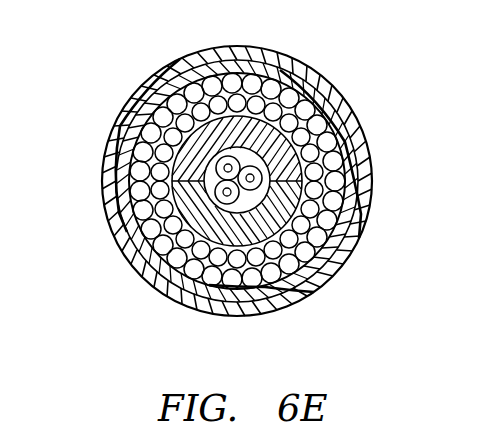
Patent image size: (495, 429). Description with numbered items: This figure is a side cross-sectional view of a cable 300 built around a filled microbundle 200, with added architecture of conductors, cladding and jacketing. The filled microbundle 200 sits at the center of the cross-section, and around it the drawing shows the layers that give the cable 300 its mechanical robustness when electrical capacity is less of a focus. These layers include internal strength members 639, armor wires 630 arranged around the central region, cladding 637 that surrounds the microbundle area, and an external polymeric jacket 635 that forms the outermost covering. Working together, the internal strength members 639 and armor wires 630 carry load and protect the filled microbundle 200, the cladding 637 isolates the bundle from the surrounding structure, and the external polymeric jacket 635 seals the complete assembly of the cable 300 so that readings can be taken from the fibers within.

The cable 300 is at (333, 55).
The armor wires 630 is at (357, 124).
The external polymeric jacket 635 is at (370, 172).
The cladding 637 is at (345, 212).
The internal strength members 639 is at (320, 287).
The filled microbundle 200 is at (213, 186).